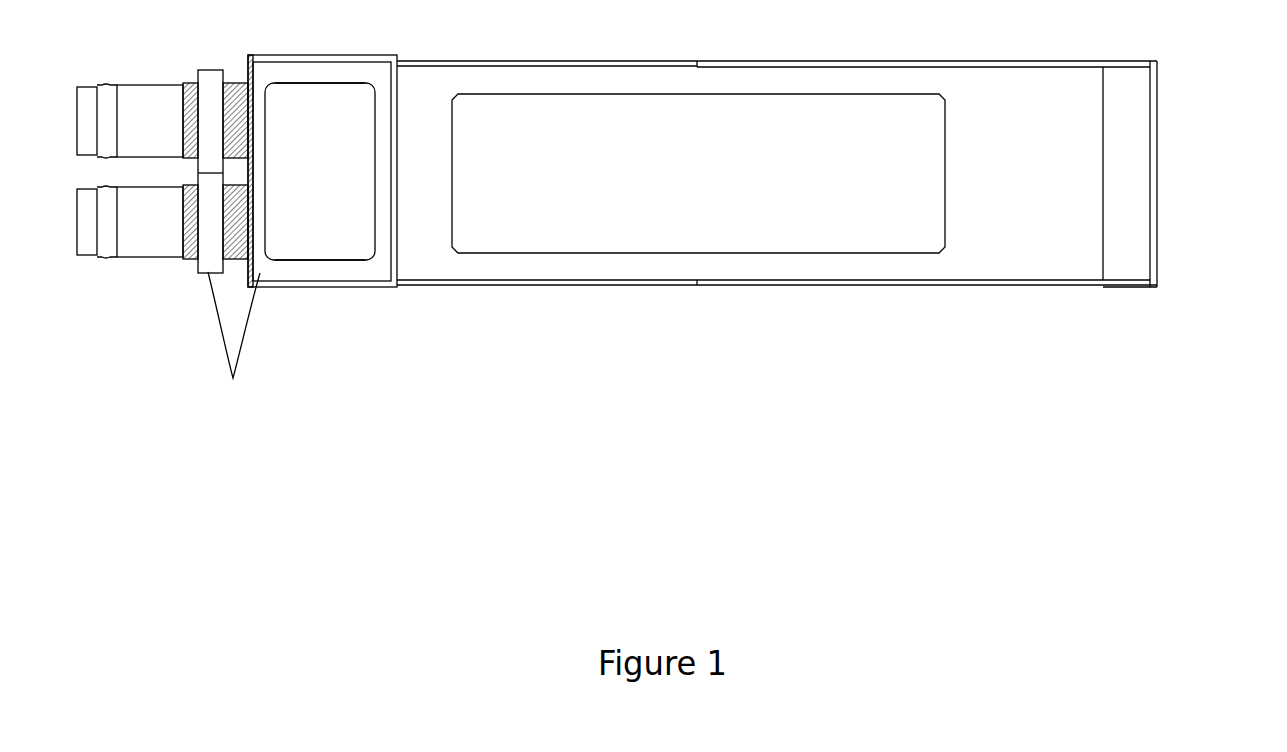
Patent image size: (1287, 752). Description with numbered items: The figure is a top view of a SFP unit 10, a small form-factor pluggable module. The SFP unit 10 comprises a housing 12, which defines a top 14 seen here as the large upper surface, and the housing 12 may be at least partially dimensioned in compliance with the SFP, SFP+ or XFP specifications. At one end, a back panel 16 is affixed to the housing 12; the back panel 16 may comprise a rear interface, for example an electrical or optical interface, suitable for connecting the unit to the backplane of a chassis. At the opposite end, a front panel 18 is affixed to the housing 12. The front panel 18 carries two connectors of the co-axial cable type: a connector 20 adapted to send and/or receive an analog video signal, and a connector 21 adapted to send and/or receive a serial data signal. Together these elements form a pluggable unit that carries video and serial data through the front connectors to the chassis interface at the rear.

The SFP unit 10 is at (974, 42).
The housing 12 is at (855, 290).
The top 14 is at (665, 219).
The back panel 16 is at (1162, 180).
The front panel 18 is at (203, 272).
The connector 20 is at (157, 128).
The connector 21 is at (164, 237).